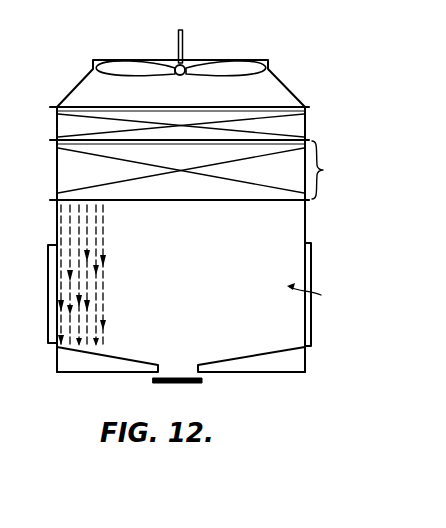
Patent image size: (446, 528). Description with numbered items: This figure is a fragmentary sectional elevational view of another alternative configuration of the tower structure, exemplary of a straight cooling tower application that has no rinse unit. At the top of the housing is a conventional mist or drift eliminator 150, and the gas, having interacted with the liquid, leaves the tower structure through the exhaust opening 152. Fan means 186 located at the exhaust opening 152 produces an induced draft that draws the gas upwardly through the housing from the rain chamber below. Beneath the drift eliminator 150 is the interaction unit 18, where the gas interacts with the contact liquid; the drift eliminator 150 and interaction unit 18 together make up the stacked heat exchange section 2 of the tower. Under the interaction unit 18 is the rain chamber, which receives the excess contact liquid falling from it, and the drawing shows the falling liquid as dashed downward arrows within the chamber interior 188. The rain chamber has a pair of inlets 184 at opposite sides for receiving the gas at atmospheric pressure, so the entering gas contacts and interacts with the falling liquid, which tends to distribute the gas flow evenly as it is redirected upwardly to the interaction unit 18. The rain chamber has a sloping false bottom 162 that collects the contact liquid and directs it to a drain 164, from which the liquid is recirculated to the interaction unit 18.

The exhaust opening 152 is at (93, 63).
The fan means 186 is at (140, 81).
The drift eliminator 150 is at (57, 130).
The interaction unit 18 is at (57, 163).
The heat exchange assembly 2 is at (325, 170).
The plenum chamber 188 is at (204, 270).
The inlets 184 is at (48, 273).
The sloping false bottom 162 is at (226, 363).
The drain 164 is at (178, 385).